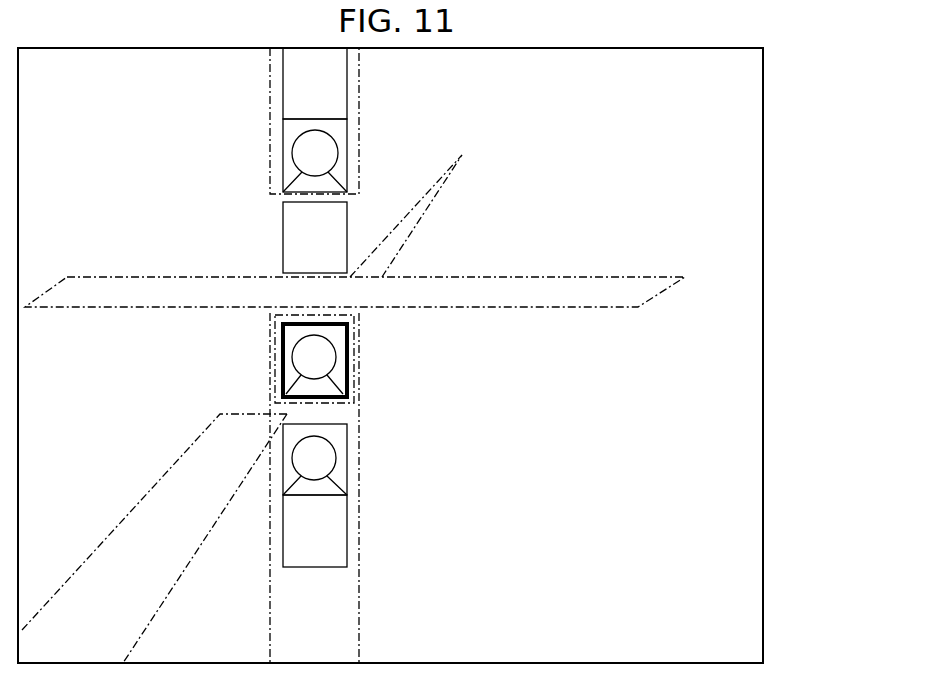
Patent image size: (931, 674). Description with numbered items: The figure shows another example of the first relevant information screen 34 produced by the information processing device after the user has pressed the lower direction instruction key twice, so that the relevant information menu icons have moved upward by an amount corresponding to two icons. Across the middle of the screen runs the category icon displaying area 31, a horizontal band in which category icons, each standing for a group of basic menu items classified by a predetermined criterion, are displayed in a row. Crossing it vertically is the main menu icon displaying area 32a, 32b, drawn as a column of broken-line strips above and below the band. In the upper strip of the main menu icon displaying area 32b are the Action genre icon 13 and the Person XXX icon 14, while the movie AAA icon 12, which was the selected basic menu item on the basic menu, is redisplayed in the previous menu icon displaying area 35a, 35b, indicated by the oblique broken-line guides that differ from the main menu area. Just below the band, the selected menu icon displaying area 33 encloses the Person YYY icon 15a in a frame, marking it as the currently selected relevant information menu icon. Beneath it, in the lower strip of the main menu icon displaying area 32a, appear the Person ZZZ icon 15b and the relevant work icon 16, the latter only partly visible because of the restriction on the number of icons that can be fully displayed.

The icon representative of movie AAA 12 is at (283, 230).
The icon representative of genre Action 13 is at (283, 62).
The icon representative of Person XXX 14 is at (283, 137).
The icon representative of Person YYY 15a is at (348, 353).
The icon representative of Person ZZZ 15b is at (347, 457).
The icon representative of Relevant Work AAA2 16 is at (347, 532).
The category icon displaying area 31 is at (663, 293).
The main menu icon displaying area 32a is at (360, 625).
The main menu icon displaying area 32b is at (360, 62).
The selected menu icon displaying area 33 is at (357, 385).
The first relevant information screen 34 is at (763, 620).
The previous menu icon displaying area 35a is at (160, 473).
The previous menu icon displaying area 35b is at (430, 207).